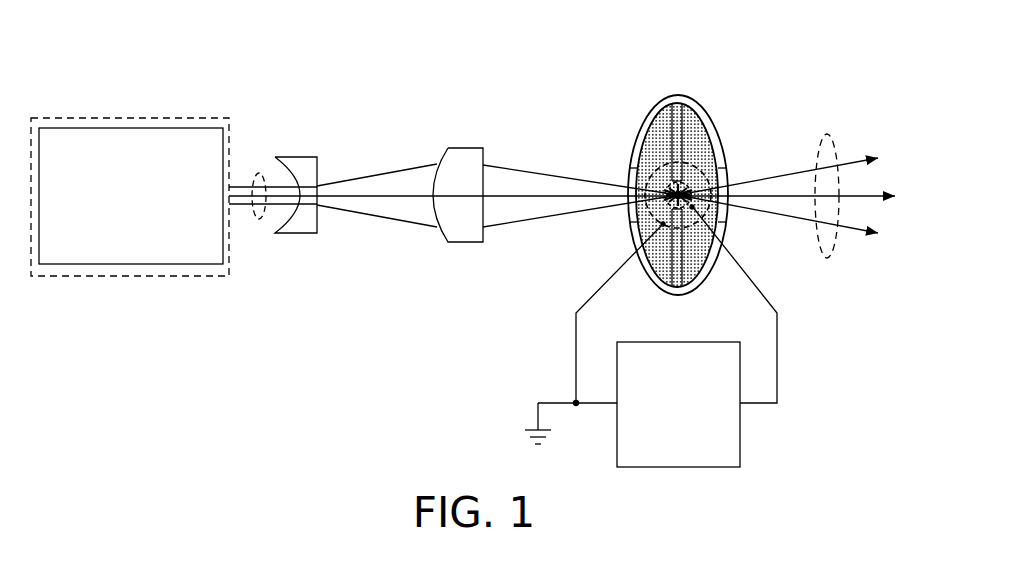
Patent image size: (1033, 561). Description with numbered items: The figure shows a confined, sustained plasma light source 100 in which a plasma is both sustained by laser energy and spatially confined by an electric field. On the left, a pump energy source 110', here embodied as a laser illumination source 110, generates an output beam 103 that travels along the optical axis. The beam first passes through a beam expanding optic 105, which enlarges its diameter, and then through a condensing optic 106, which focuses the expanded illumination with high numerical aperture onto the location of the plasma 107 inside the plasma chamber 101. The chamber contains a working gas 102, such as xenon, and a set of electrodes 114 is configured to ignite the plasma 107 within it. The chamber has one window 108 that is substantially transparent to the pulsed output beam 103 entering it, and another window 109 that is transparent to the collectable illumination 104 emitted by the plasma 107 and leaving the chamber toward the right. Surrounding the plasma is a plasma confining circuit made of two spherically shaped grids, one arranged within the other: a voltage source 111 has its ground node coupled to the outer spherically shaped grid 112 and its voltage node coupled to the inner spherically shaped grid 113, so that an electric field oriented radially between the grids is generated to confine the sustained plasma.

The confined, sustained plasma (CSP) light source 100 is at (118, 97).
The plasma chamber 101 is at (657, 109).
The working gas 102 is at (658, 143).
The output beam 103 is at (258, 172).
The collectable illumination 104 is at (827, 134).
The beam expanding optic 105 is at (290, 236).
The condensing optic 106 is at (463, 243).
The plasma 107 is at (688, 190).
The window 108 is at (631, 176).
The window 109 is at (729, 178).
The laser illumination source 110 is at (131, 196).
The pump energy source 110' is at (130, 221).
The voltage source 111 is at (664, 441).
The outer spherically shaped grid 112 is at (661, 224).
The inner spherically shaped grid 113 is at (695, 210).
The electrodes 114 is at (681, 122).